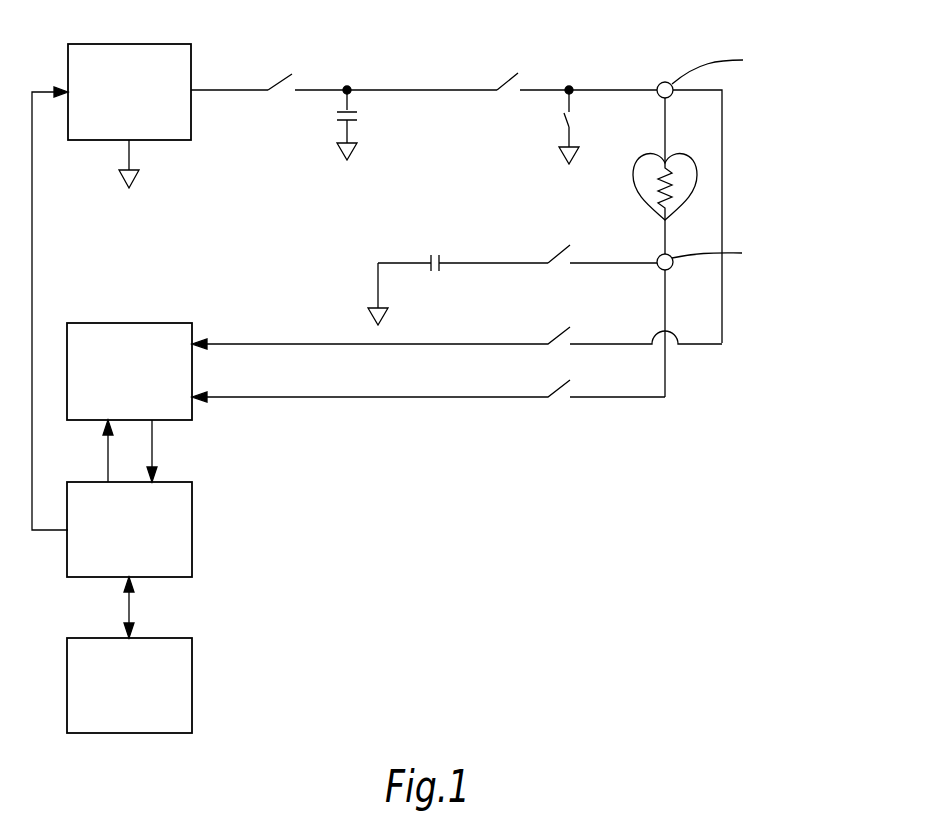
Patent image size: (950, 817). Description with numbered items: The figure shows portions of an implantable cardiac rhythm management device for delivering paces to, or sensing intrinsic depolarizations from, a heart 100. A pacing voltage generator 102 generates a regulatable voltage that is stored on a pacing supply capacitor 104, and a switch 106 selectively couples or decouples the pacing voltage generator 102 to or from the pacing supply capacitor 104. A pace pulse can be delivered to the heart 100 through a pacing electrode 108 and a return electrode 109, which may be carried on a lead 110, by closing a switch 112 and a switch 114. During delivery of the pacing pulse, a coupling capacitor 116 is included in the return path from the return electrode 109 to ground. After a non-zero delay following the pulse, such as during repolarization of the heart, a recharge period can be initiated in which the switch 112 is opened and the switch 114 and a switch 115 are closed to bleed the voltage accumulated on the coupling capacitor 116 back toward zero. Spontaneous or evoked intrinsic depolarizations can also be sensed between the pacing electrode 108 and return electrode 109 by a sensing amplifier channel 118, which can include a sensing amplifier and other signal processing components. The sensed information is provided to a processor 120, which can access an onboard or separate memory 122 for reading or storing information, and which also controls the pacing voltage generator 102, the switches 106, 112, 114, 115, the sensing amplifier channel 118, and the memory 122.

The heart 100 is at (639, 198).
The pacing voltage generator 102 is at (173, 43).
The pacing supply capacitor 104 is at (337, 118).
The switch 106 is at (279, 79).
The pacing electrode 108 is at (665, 80).
The return electrode 109 is at (657, 269).
The lead 110 is at (610, 87).
The switch 112 is at (505, 79).
The switch 114 is at (558, 253).
The switch 115 is at (563, 120).
The coupling capacitor 116 is at (437, 254).
The sensing amplifier channel 118 is at (173, 323).
The processor 120 is at (173, 481).
The memory 122 is at (173, 637).